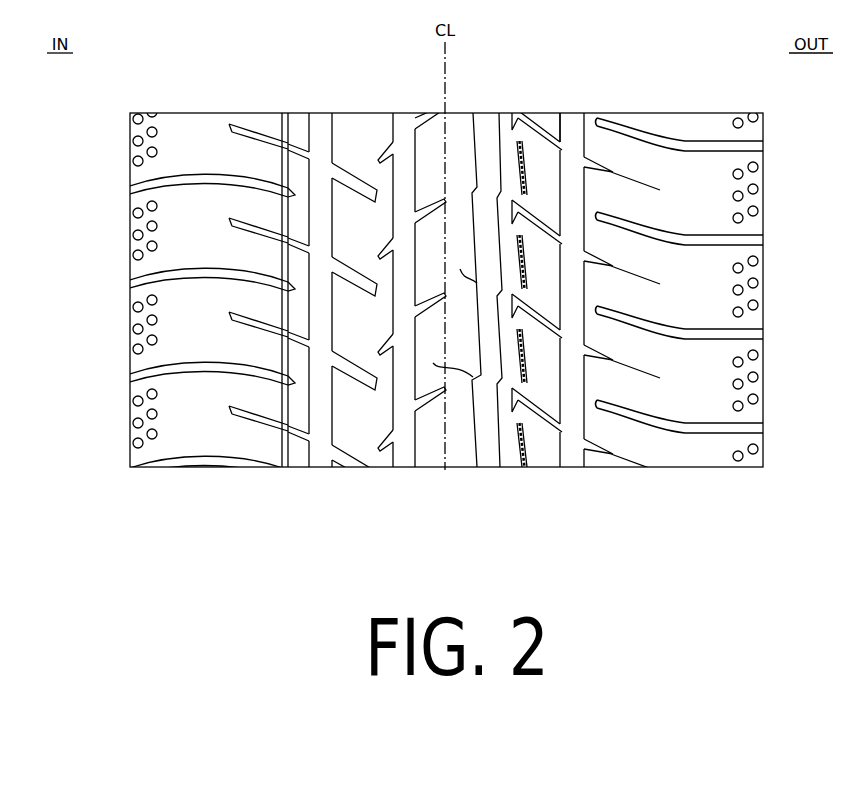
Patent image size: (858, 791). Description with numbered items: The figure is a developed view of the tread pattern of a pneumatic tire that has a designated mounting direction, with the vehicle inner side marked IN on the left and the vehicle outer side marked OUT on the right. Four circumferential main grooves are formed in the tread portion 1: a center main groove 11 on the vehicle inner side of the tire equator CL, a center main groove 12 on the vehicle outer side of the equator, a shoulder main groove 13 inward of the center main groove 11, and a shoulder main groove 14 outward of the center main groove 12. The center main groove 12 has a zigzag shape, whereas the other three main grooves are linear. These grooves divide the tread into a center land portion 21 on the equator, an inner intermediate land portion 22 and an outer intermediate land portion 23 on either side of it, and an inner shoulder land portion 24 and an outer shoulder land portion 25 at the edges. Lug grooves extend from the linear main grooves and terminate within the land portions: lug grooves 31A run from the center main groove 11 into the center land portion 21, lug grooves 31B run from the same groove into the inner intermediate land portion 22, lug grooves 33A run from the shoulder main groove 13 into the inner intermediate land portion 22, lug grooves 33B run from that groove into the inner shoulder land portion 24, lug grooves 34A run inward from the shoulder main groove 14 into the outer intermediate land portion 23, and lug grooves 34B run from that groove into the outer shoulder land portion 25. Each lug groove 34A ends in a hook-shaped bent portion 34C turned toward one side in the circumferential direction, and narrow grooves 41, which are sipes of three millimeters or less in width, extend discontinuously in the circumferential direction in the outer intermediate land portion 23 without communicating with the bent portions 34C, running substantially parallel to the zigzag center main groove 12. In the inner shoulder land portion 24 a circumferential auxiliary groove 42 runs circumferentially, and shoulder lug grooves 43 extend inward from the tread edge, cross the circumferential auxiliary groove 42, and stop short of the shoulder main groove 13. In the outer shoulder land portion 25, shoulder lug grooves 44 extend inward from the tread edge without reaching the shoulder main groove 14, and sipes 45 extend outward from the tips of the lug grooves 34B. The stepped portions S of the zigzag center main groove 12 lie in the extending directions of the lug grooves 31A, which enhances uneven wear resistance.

The tread portion 1 is at (619, 113).
The center main groove 11 is at (408, 112).
The center main groove 12 is at (493, 113).
The shoulder main groove 13 is at (323, 125).
The shoulder main groove 14 is at (577, 117).
The center land portion 21 is at (446, 291).
The inner intermediate land portion 22 is at (371, 291).
The outer intermediate land portion 23 is at (525, 291).
The inner shoulder land portion 24 is at (219, 291).
The outer shoulder land portion 25 is at (673, 291).
The lug groove 31A is at (420, 420).
The lug groove 31B is at (386, 448).
The lug groove 33A is at (378, 448).
The lug groove 33B is at (257, 415).
The lug groove 34A is at (540, 420).
The lug groove 34B is at (605, 450).
The bent portion 34C is at (515, 400).
The narrow groove 41 is at (518, 435).
The circumferential auxiliary groove 42 is at (289, 450).
The shoulder lug groove 43 is at (208, 470).
The shoulder lug groove 44 is at (697, 432).
The sipe 45 is at (648, 373).